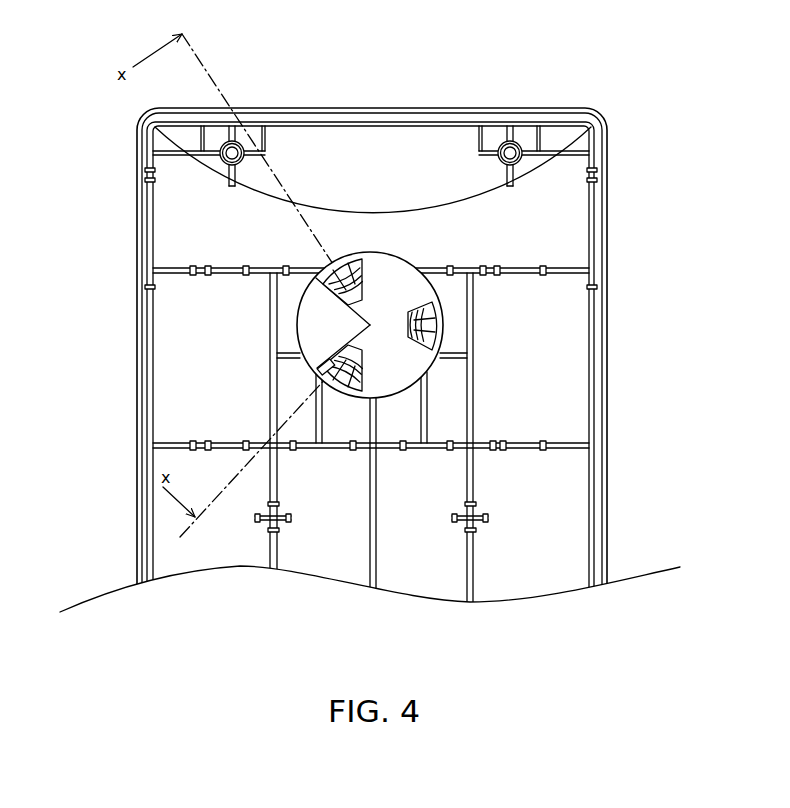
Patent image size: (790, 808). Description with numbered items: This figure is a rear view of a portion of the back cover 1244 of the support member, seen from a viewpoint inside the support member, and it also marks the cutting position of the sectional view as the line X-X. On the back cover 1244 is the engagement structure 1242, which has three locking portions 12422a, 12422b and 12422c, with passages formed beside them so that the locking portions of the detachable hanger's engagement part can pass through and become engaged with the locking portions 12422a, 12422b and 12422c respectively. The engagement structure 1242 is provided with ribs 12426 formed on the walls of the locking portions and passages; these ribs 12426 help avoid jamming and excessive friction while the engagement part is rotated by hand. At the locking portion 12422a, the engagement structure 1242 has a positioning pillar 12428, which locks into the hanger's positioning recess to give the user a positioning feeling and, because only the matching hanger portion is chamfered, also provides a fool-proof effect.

The engagement structure 1242 is at (408, 257).
The back cover 1244 is at (605, 150).
The locking portion 12422a is at (357, 380).
The locking portion 12422b is at (343, 283).
The locking portion 12422c is at (424, 333).
The ribs 12426 is at (347, 270).
The positioning pillar 12428 is at (343, 376).